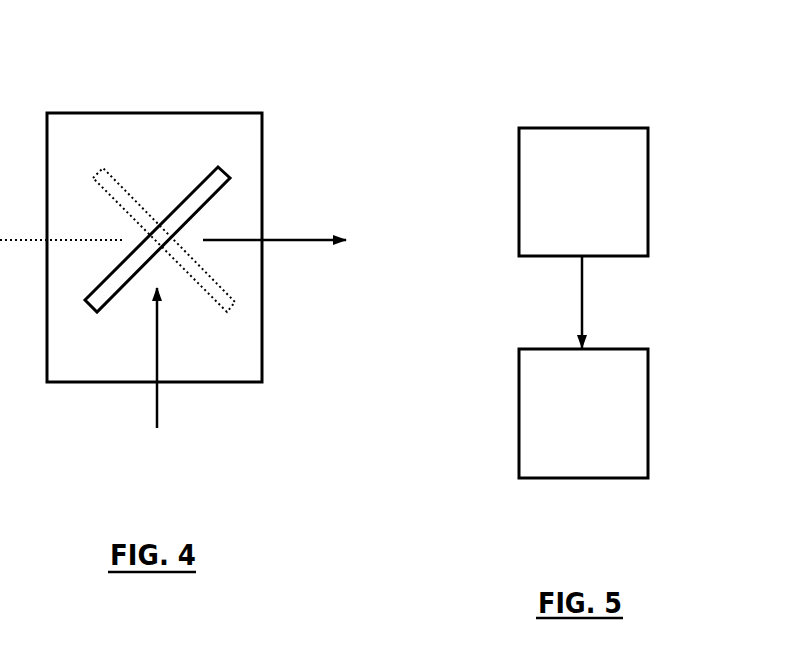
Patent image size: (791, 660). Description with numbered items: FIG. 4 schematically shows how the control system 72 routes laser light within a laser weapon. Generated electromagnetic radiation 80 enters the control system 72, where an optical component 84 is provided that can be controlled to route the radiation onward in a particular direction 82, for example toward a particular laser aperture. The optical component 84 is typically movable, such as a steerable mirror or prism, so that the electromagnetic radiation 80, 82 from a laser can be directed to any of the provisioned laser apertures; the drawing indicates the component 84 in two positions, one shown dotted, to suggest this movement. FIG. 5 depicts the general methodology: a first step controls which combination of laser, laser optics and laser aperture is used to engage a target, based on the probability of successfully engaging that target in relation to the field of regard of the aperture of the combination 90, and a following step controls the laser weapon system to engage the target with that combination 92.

In FIG. 4, the control system 72 is at (92, 122).
In FIG. 4, the optical component 84 is at (203, 173).
In FIG. 4, the particular direction 82 is at (310, 250).
In FIG. 4, the generated electromagnetic radiation 80 is at (177, 408).
In FIG. 5, the controlling which combination is used 90 is at (565, 202).
In FIG. 5, the controlling the laser weapon system to engage the target 92 is at (565, 415).